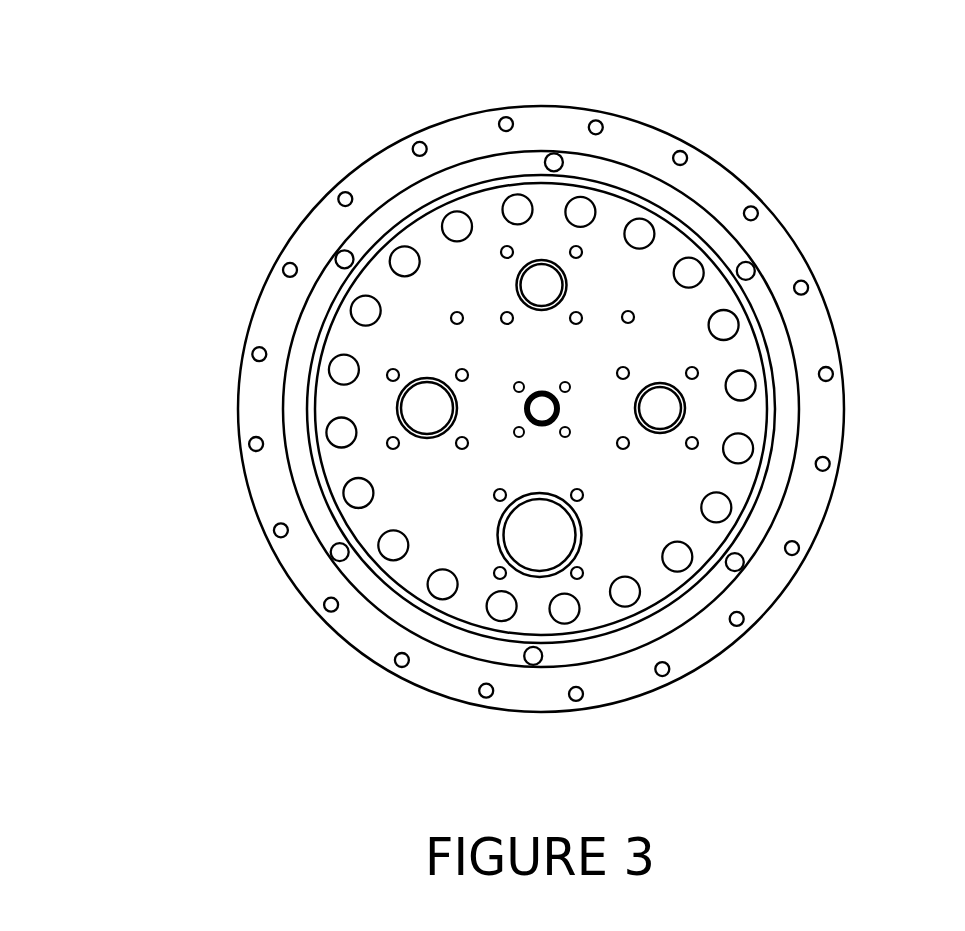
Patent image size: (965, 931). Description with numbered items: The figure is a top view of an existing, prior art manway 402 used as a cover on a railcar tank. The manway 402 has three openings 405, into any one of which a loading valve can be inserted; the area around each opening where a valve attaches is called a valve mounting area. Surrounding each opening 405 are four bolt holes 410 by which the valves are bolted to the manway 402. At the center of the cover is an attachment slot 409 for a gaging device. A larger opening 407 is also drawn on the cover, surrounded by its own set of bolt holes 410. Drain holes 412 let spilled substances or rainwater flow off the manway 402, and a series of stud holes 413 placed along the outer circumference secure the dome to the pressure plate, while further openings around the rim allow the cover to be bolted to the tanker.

The manway 402 is at (363, 165).
The openings 405 is at (542, 284).
The central/large port 407 is at (545, 555).
The attachment slot 409 is at (527, 413).
The bolt holes 410 is at (502, 312).
The drain holes 412 is at (263, 363).
The stud holes 413 is at (421, 135).